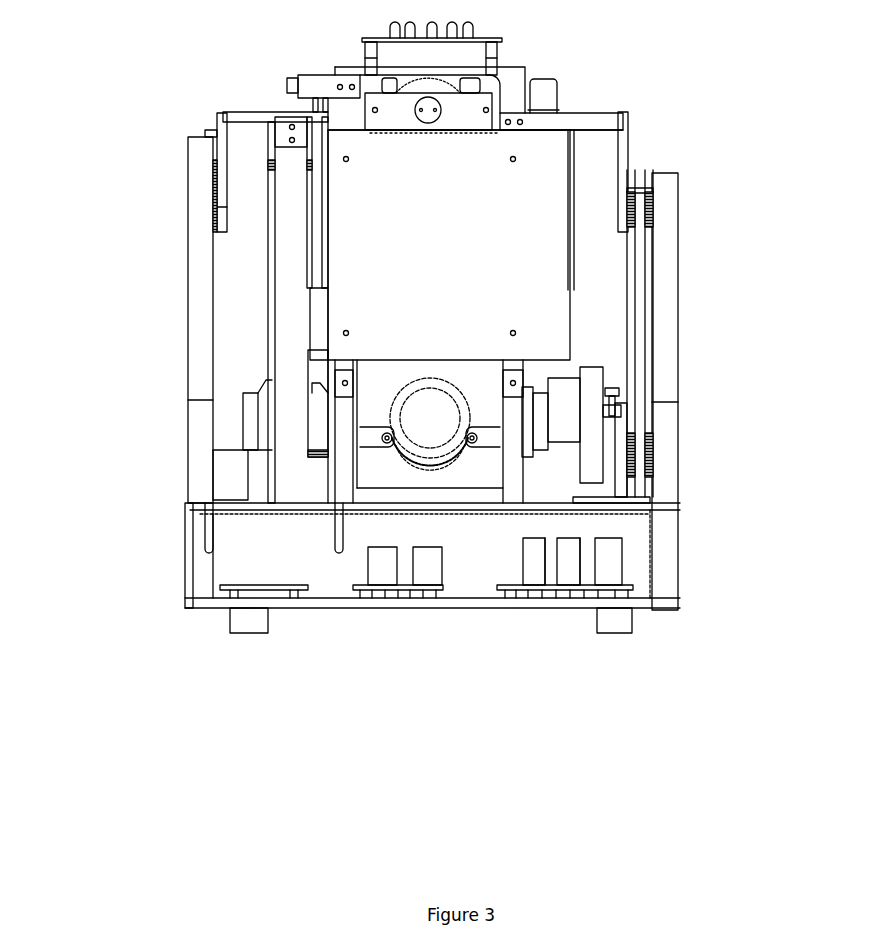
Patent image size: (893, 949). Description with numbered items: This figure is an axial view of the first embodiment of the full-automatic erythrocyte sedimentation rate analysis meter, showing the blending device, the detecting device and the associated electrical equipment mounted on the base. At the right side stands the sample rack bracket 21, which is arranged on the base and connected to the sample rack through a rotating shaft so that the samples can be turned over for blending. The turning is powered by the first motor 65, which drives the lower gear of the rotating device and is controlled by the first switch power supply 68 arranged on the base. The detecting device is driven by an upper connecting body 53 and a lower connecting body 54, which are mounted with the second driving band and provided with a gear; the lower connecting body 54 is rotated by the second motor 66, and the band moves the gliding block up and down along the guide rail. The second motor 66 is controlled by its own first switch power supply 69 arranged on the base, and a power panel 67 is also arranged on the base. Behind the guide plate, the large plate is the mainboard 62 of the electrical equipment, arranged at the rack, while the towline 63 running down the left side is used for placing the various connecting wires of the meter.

The sample rack bracket 21 is at (667, 363).
The upper connecting body 53 is at (433, 88).
The lower connecting body 54 is at (448, 483).
The mainboard 62 is at (365, 250).
The towline 63 is at (295, 333).
The first motor 65 is at (557, 410).
The second motor 66 is at (425, 420).
The power panel 67 is at (263, 590).
The first switch power supply 68 is at (577, 590).
The first switch power supply 69 is at (412, 590).